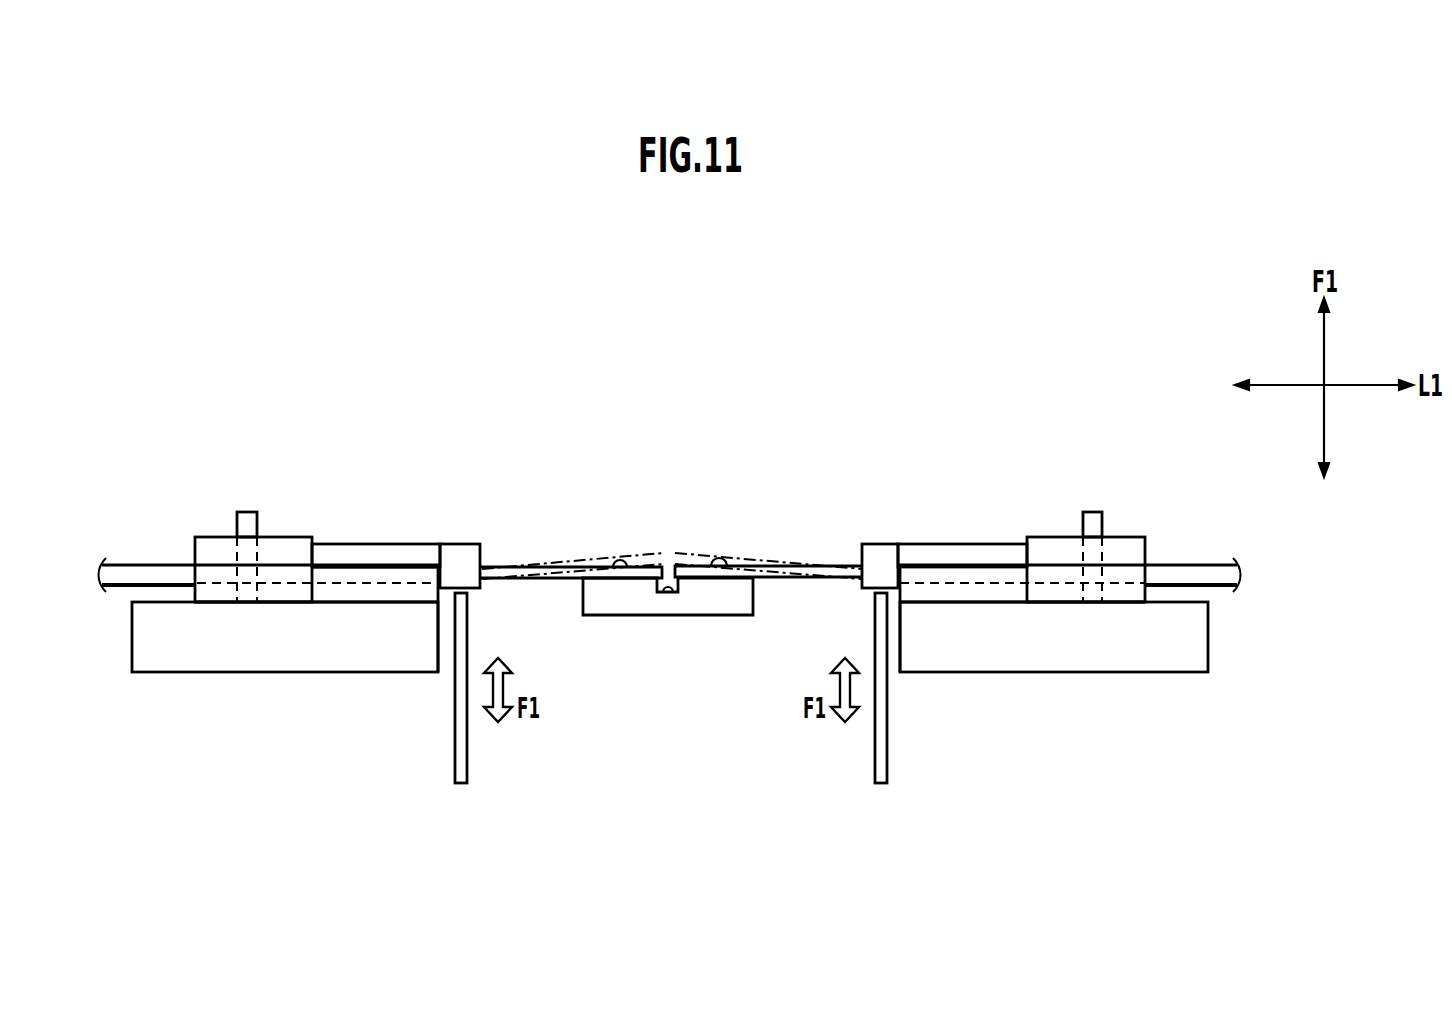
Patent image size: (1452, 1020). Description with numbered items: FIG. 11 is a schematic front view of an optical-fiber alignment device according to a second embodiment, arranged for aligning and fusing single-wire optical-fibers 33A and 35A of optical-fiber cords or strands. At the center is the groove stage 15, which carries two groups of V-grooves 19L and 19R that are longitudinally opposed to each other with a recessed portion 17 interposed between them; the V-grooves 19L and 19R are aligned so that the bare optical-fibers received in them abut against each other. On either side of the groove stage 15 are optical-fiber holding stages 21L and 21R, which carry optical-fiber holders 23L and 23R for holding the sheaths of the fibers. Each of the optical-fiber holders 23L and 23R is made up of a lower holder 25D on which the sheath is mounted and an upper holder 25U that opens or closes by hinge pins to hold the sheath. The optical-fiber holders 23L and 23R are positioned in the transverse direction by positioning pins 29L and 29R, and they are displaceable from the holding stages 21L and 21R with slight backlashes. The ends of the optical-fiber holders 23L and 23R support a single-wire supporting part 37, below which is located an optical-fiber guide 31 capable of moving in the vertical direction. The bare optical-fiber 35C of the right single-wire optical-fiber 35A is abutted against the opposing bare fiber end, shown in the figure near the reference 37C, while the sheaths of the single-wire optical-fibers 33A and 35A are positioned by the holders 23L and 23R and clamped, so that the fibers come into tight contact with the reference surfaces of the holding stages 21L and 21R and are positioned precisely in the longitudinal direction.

The groove stage 15 is at (633, 607).
The recessed portion 17 is at (668, 584).
The V-grooves 19L is at (621, 562).
The V-grooves 19R is at (721, 568).
The optical-fiber holding stage 21L is at (337, 640).
The optical-fiber holding stage 21R is at (1148, 657).
The optical-fiber holder 23L is at (291, 610).
The optical-fiber holder 23R is at (1030, 610).
The upper holder 25U is at (357, 552).
The lower holder 25D is at (405, 595).
The positioning pin 29L is at (250, 520).
The positioning pin 29R is at (1093, 515).
The optical-fiber guide 31 is at (462, 752).
The single-wire optical-fiber 33A is at (167, 563).
The single-wire optical-fiber 35A is at (1174, 562).
The bare optical-fiber 35C is at (596, 560).
The single-wire supporting part 37 is at (455, 574).
The right arm 37C is at (742, 560).